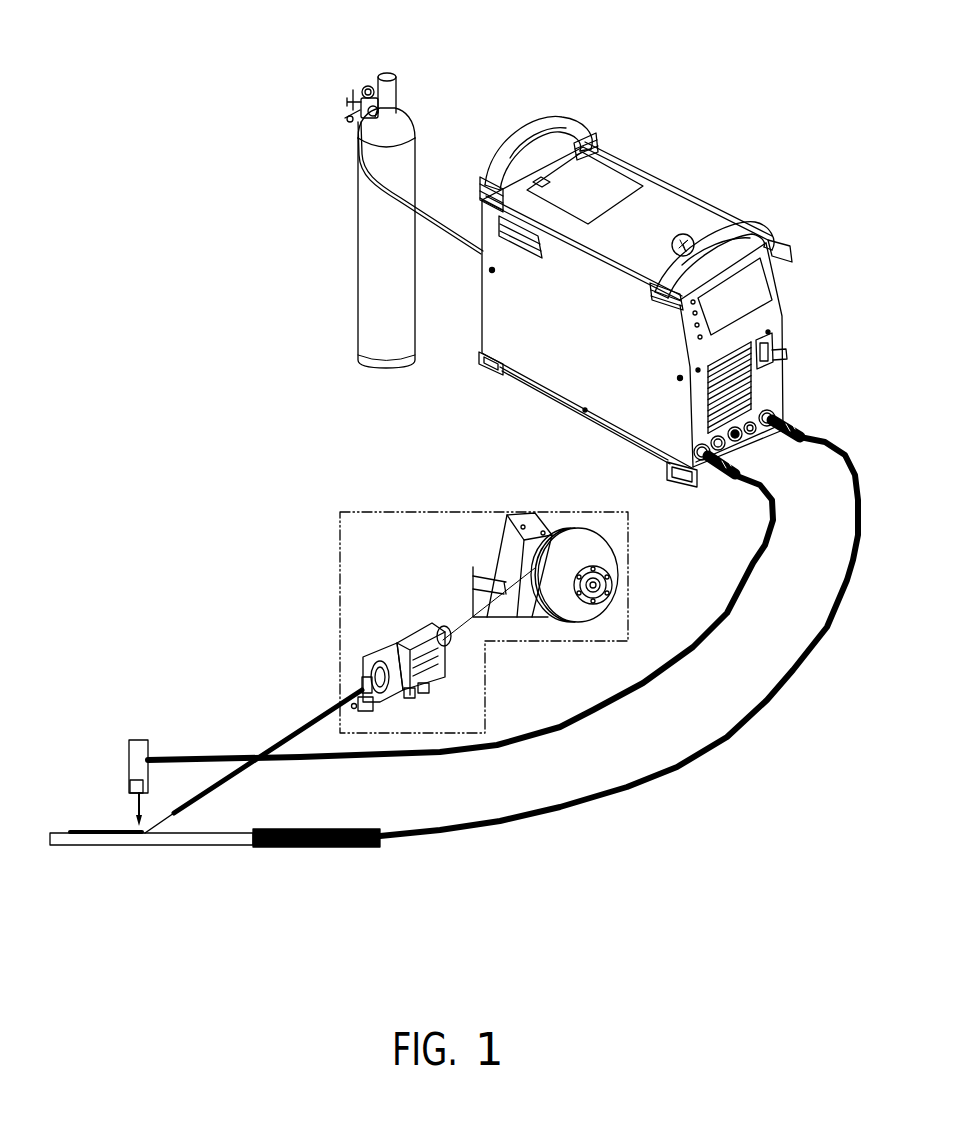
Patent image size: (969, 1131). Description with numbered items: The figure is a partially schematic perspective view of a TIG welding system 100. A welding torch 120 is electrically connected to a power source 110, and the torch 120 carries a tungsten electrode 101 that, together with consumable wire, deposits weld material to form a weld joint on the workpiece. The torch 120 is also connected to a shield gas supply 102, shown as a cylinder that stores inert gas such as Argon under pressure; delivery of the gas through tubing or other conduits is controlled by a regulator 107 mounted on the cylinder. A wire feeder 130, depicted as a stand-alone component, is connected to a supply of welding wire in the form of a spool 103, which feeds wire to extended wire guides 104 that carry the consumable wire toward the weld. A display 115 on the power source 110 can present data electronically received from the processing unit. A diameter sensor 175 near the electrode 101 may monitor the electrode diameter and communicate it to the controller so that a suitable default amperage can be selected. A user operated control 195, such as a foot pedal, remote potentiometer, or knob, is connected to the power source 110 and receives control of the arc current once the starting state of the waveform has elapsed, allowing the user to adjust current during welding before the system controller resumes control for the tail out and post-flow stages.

The welding system 100 is at (190, 56).
The tungsten electrode 101 is at (138, 818).
The shield gas supply 102 is at (407, 163).
The spool 103 is at (593, 553).
The wire guides 104 is at (213, 793).
The regulator 107 is at (375, 85).
The power source 110 is at (749, 93).
The display 115 is at (750, 295).
The welding torch 120 is at (140, 742).
The wire feeder 130 is at (440, 680).
The diameter sensor 175 is at (138, 784).
The user operated control 195 is at (503, 636).